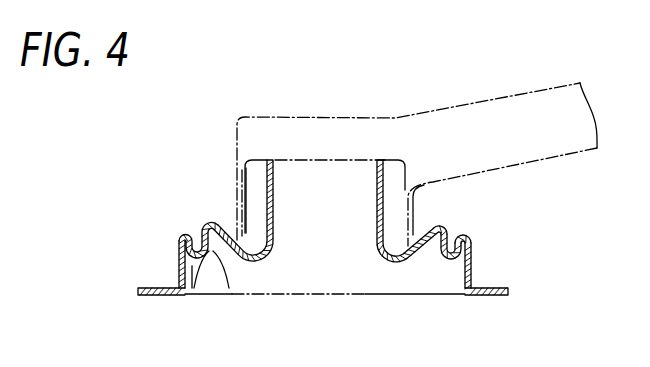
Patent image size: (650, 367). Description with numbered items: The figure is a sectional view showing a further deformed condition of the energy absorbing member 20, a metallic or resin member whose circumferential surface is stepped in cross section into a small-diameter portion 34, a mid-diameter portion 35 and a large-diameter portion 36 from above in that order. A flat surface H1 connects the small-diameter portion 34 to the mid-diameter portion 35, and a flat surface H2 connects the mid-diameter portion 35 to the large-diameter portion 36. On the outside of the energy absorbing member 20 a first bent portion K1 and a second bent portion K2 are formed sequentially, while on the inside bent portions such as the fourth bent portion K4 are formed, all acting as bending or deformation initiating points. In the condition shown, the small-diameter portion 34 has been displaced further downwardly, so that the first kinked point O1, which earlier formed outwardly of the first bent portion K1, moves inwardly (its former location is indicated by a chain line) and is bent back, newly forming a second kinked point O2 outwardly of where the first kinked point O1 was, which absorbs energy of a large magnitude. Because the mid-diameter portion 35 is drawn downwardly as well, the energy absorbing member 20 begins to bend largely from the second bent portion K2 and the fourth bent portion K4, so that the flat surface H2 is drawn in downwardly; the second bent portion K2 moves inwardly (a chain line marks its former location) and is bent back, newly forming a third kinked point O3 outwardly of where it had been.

The energy absorbing member 20 is at (327, 236).
The small-diameter portion 34 is at (267, 182).
The mid-diameter portion 35 is at (200, 236).
The large-diameter portion 36 is at (178, 258).
The flat surface H1 is at (248, 231).
The flat surface H2 is at (229, 295).
The first bent portion K1 is at (417, 256).
The second bent portion K2 is at (452, 242).
The fourth bent portion K4 is at (195, 295).
The first kinked point O1 is at (414, 236).
The second kinked point O2 is at (439, 227).
The third kinked point O3 is at (470, 238).